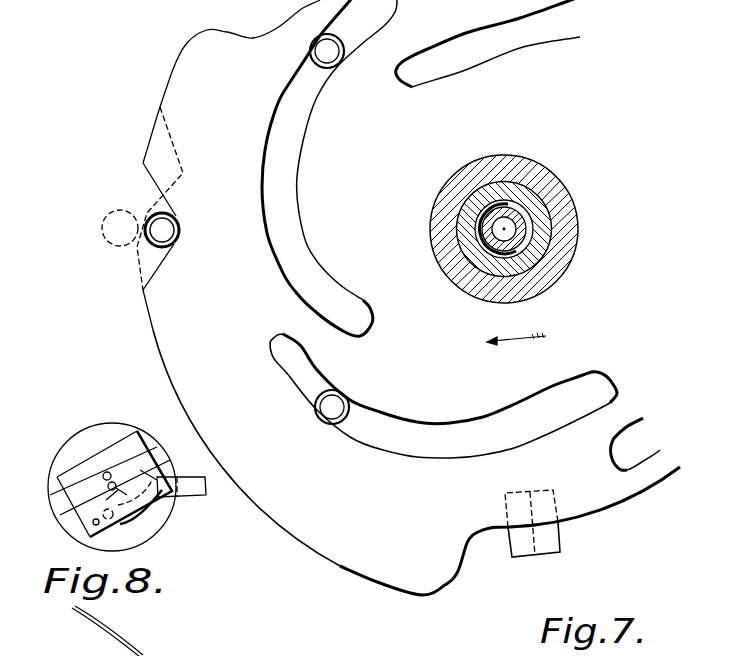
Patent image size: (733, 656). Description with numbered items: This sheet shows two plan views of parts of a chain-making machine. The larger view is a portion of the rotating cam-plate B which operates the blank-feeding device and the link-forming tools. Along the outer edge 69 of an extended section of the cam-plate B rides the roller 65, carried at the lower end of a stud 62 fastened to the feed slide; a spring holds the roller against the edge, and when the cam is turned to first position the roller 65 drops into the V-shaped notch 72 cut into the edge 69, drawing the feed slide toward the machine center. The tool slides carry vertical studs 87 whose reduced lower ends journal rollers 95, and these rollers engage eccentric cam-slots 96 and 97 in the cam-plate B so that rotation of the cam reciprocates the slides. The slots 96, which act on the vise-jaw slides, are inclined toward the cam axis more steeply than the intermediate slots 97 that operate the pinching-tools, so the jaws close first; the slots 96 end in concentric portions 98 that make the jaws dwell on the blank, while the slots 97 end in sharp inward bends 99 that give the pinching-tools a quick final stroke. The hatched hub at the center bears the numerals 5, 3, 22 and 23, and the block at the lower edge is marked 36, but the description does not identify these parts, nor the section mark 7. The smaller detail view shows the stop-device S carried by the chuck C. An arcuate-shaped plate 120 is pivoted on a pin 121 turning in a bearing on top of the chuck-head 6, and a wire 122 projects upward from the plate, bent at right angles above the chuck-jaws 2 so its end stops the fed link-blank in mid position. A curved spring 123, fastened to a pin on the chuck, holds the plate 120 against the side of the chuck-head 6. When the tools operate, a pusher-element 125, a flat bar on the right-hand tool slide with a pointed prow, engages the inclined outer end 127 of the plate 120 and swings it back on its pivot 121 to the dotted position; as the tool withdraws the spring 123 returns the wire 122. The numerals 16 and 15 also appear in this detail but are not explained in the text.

In FIG. 7, the outer edge 69 is at (155, 347).
In FIG. 7, the V-shaped notch 72 is at (177, 147).
In FIG. 7, the stud 62 is at (162, 230).
In FIG. 7, the roller 65 is at (104, 232).
In FIG. 7, the cam-slots 97 is at (303, 145).
In FIG. 7, the inward bends 99 is at (350, 290).
In FIG. 7, the cam-slots 96 is at (519, 40).
In FIG. 7, the concentric portions 98 is at (431, 78).
In FIG. 7, the studs 87 is at (328, 53).
In FIG. 7, the rollers 95 is at (330, 67).
In FIG. 7, the hub sleeve 5 is at (540, 290).
In FIG. 7, the bearing sleeve 3 is at (543, 235).
In FIG. 7, the ring 22 is at (517, 243).
In FIG. 7, the bushing 23 is at (517, 255).
In FIG. 7, the block 36 is at (560, 540).
In FIG. 7, the plate / section line 7 is at (516, 339).
In FIG. 8, the plate / section line 7 is at (114, 481).
In FIG. 7, the cam-plate B is at (456, 480).
In FIG. 8, the chuck C is at (57, 441).
In FIG. 8, the stop-device S is at (58, 494).
In FIG. 8, the chuck-head 6 is at (113, 453).
In FIG. 8, the chuck-jaws 2 is at (110, 481).
In FIG. 8, the lever 16 is at (106, 477).
In FIG. 8, the pin 15 is at (100, 492).
In FIG. 8, the arcuate-shaped plate 120 is at (166, 505).
In FIG. 8, the pusher-element 125 is at (203, 488).
In FIG. 8, the inclined outer end 127 is at (172, 477).
In FIG. 8, the curved spring 123 is at (150, 520).
In FIG. 8, the pin 121 is at (143, 534).
In FIG. 8, the wire 122 is at (82, 533).